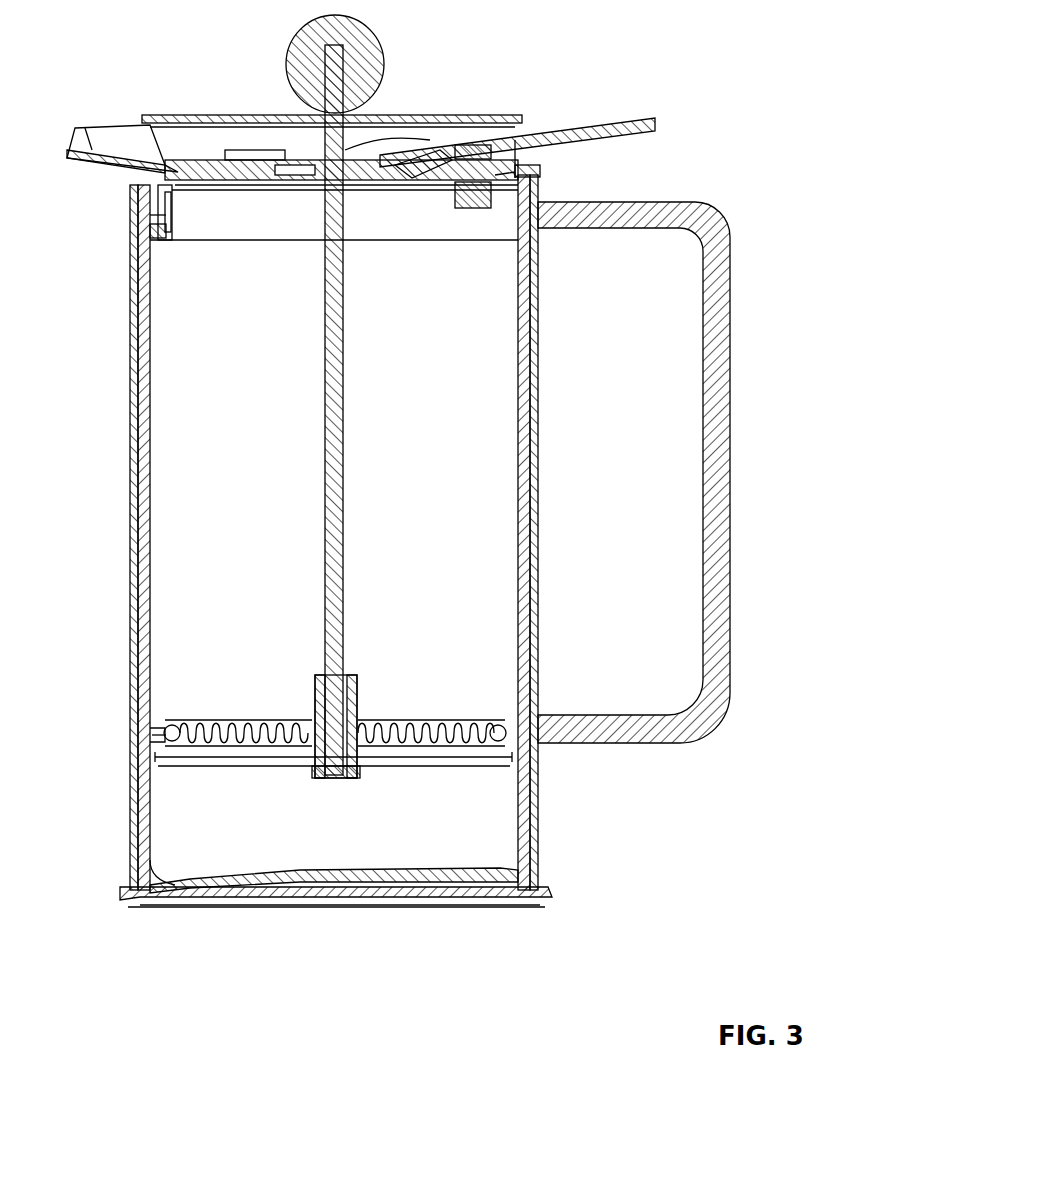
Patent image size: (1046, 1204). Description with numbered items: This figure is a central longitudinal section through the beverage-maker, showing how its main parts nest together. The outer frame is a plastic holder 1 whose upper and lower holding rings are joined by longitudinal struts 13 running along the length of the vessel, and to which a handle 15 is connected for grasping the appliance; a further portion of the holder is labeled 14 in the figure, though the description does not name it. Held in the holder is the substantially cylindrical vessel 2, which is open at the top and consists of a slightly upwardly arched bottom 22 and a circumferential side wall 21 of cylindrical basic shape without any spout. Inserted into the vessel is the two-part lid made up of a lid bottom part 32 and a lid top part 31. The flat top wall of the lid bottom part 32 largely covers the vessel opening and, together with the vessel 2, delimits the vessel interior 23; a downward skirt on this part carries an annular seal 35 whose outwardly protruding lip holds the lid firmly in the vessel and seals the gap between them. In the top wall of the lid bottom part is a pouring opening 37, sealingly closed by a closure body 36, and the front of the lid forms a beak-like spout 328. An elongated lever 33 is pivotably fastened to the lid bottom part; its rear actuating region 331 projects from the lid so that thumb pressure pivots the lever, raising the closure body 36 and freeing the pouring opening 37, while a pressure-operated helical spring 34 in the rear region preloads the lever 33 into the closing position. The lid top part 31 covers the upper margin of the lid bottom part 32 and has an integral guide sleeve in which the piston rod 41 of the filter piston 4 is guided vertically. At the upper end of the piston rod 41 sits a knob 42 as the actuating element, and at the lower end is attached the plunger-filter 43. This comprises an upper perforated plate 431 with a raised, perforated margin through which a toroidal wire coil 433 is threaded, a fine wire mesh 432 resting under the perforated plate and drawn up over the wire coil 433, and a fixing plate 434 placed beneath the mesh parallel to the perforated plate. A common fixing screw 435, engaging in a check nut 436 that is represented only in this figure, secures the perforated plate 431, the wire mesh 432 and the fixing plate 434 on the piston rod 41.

The holder 1 is at (584, 780).
The vessel 2 is at (328, 539).
The filter piston 4 is at (262, 427).
The longitudinal struts 13 is at (132, 465).
The housing side wall 14 is at (538, 572).
The handle 15 is at (712, 458).
The side wall 21 is at (150, 508).
The bottom 22 is at (300, 871).
The vessel interior 23 is at (441, 483).
The lid top part 31 is at (250, 122).
The lid bottom part 32 is at (200, 230).
The lever 33 is at (598, 98).
The helical spring 34 is at (520, 175).
The seal 35 is at (150, 232).
The closure body 36 is at (205, 170).
The pouring opening 37 is at (222, 208).
The piston rod 41 is at (345, 580).
The knob 42 is at (370, 52).
The plunger-filter 43 is at (262, 744).
The spout 328 is at (92, 162).
The actuating region 331 is at (552, 150).
The perforated plate 431 is at (298, 720).
The wire mesh 432 is at (160, 740).
The wire coil 433 is at (205, 720).
The fixing plate 434 is at (212, 767).
The fixing screw 435 is at (345, 778).
The check nut 436 is at (356, 690).